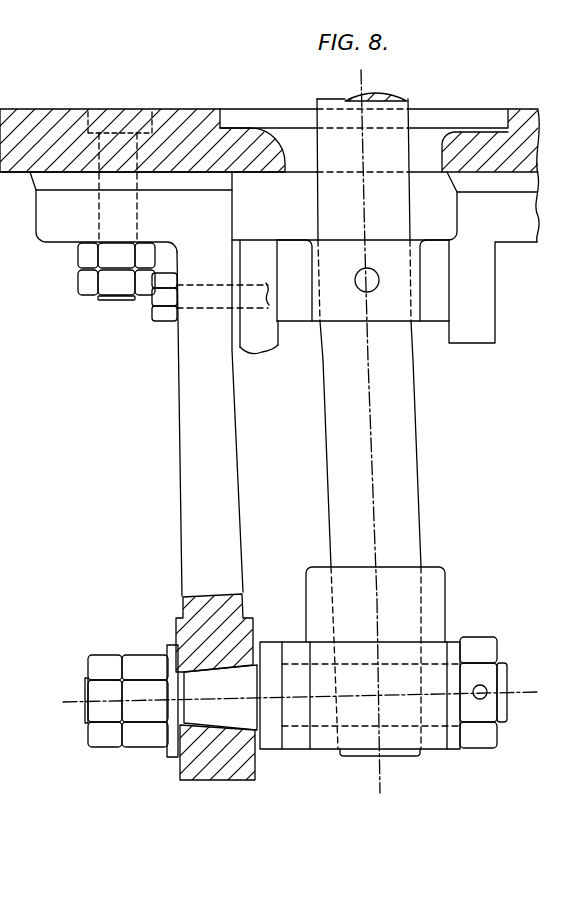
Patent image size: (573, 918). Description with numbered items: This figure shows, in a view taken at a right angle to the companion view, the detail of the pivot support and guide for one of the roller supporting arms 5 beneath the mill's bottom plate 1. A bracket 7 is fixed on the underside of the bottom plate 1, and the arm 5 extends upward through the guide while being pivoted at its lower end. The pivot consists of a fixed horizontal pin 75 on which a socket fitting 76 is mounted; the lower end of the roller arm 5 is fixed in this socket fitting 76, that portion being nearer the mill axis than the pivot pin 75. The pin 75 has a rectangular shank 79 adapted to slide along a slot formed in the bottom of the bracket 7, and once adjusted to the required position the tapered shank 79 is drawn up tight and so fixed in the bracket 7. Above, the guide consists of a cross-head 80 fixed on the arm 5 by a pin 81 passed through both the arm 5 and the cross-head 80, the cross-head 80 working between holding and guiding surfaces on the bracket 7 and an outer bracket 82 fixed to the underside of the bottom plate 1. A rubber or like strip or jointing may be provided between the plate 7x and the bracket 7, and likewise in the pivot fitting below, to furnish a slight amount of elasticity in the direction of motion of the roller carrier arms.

The bottom plate 1 is at (512, 116).
The supporting arm 5 is at (409, 193).
The bracket 7 is at (186, 417).
The plate 7x is at (258, 350).
The fixed pin 75 is at (358, 663).
The socket fitting 76 is at (432, 576).
The shank 79 is at (220, 697).
The cross-head 80 is at (297, 247).
The pin 81 is at (378, 287).
The bracket piece 82 is at (483, 288).